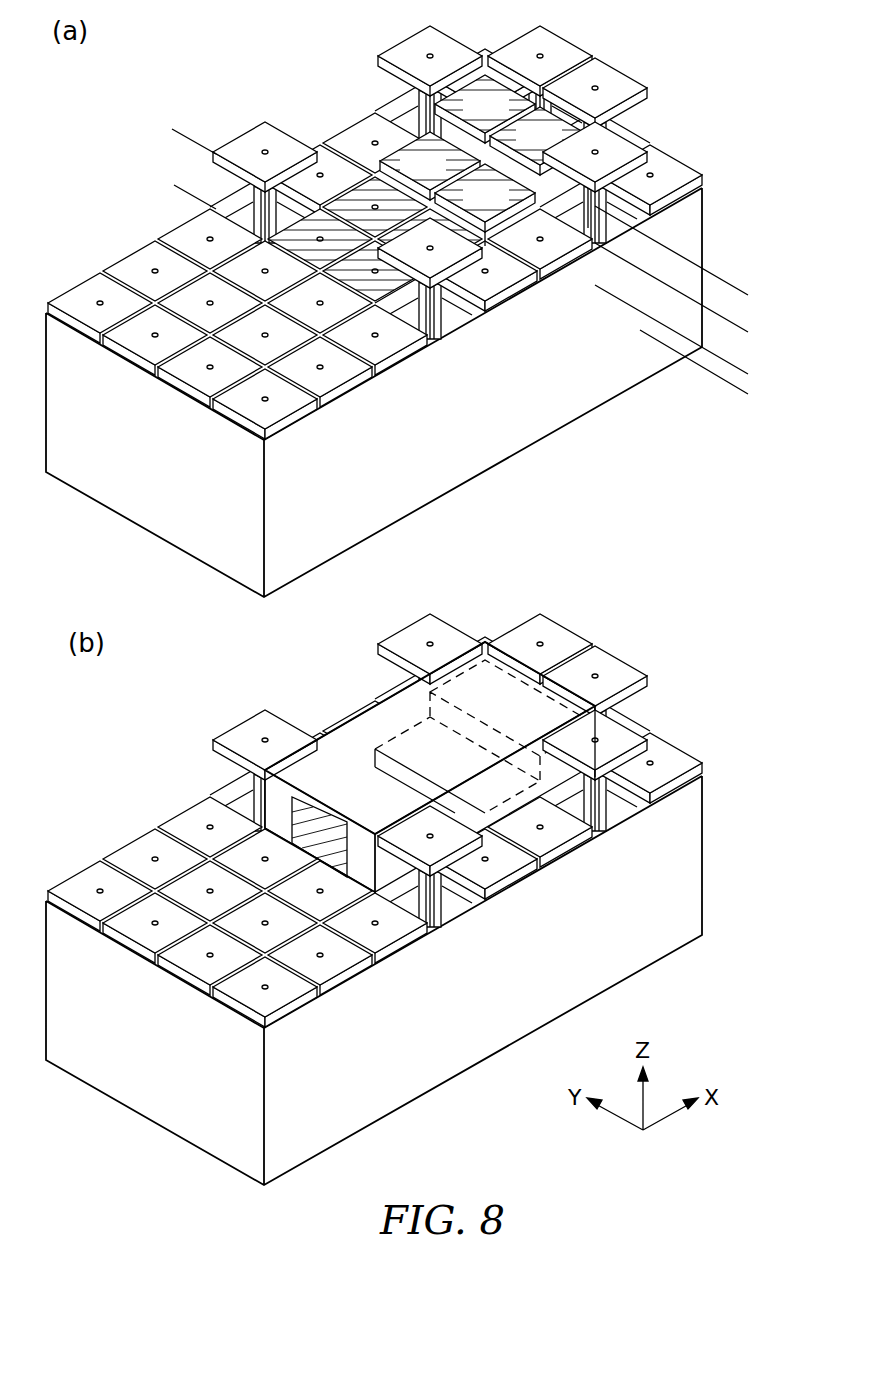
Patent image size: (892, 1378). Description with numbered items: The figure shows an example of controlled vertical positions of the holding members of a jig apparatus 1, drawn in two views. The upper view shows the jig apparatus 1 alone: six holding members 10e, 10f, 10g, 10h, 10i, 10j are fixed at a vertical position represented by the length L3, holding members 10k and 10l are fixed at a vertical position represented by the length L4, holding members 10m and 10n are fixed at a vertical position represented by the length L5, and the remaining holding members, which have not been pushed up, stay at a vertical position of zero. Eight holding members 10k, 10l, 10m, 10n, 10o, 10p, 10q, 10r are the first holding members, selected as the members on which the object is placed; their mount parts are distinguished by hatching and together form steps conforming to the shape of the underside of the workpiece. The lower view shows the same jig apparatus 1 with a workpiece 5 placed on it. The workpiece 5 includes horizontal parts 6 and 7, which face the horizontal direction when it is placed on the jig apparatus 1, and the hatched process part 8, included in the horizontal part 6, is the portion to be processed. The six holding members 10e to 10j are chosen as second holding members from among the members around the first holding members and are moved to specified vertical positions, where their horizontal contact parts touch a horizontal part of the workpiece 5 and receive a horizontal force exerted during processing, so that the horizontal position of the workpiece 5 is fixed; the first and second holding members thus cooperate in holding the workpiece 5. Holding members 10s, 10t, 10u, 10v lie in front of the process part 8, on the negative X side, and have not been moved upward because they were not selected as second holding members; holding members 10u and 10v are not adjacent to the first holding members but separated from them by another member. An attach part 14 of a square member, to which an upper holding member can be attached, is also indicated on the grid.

The jig apparatus 1 is at (122, 129).
The workpiece 5 is at (454, 767).
The horizontal part 6 is at (282, 793).
The horizontal part 7 is at (550, 781).
The process part 8 is at (292, 800).
The attach part 14 is at (152, 853).
The holding member 10e is at (256, 146).
The holding member 10f is at (405, 57).
The holding member 10g is at (596, 30).
The holding member 10h is at (618, 80).
The holding member 10i is at (625, 145).
The holding member 10j is at (447, 258).
The holding member 10k is at (485, 109).
The holding member 10l is at (540, 141).
The holding member 10m is at (430, 166).
The holding member 10n is at (485, 198).
The holding member 10o is at (348, 227).
The holding member 10p is at (375, 207).
The holding member 10q is at (375, 271).
The holding member 10r is at (430, 239).
The holding member 10s is at (240, 275).
The holding member 10t is at (323, 320).
The holding member 10u is at (178, 300).
The holding member 10v is at (273, 358).
The length L3 is at (187, 138).
The length L4 is at (724, 415).
The length L5 is at (724, 360).